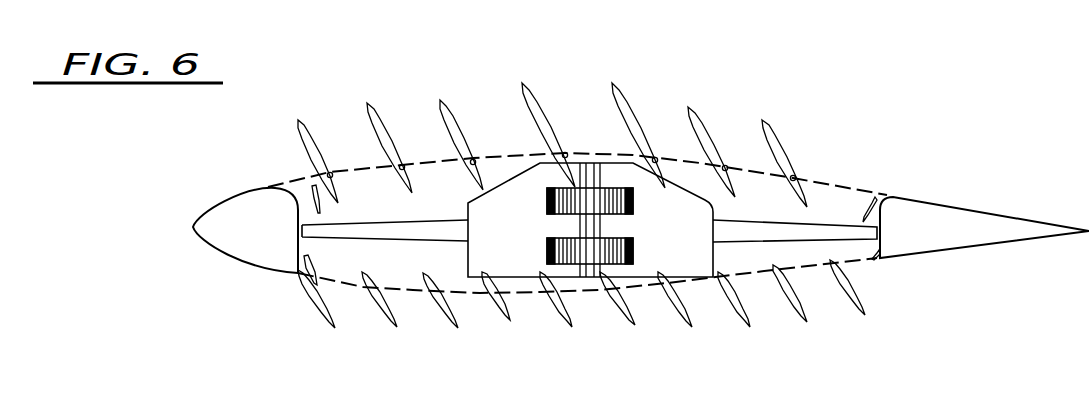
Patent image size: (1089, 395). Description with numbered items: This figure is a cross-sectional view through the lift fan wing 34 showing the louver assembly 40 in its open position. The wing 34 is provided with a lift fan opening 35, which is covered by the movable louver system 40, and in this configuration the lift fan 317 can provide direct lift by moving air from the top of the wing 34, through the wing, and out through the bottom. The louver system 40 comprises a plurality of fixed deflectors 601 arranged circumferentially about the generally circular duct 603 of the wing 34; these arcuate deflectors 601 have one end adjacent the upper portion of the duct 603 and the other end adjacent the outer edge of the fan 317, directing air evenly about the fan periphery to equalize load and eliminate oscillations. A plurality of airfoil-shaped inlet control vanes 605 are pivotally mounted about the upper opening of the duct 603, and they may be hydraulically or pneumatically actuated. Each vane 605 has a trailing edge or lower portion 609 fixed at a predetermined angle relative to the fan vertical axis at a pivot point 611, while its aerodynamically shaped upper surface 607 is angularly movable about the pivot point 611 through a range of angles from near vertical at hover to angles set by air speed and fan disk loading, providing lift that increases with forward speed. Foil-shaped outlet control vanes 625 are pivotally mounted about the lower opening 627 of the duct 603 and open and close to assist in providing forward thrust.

The louver assembly 40 is at (733, 102).
The lift fan opening 35 is at (820, 177).
The lift fan wing 34 is at (1005, 227).
The lift fan 317 is at (833, 223).
The fixed deflectors 601 is at (305, 192).
The circular duct 603 is at (308, 297).
The inlet control vanes 605 is at (527, 112).
The upper surface 607 is at (543, 98).
The trailing edge portion 609 is at (485, 165).
The pivot point 611 is at (568, 155).
The outlet control vanes 625 is at (397, 313).
The lower opening 627 is at (803, 280).